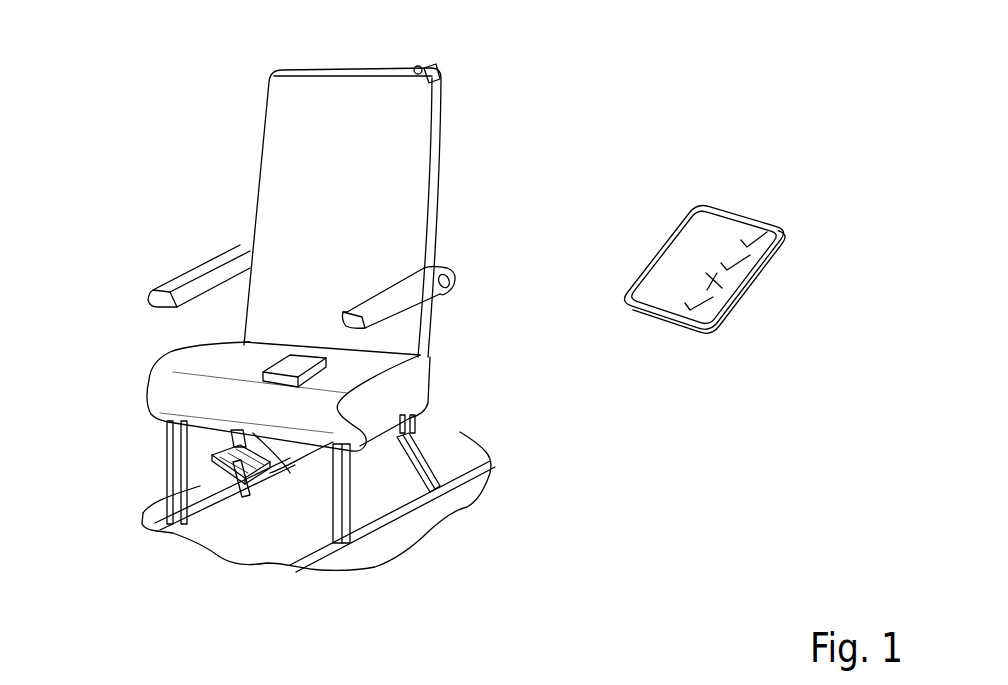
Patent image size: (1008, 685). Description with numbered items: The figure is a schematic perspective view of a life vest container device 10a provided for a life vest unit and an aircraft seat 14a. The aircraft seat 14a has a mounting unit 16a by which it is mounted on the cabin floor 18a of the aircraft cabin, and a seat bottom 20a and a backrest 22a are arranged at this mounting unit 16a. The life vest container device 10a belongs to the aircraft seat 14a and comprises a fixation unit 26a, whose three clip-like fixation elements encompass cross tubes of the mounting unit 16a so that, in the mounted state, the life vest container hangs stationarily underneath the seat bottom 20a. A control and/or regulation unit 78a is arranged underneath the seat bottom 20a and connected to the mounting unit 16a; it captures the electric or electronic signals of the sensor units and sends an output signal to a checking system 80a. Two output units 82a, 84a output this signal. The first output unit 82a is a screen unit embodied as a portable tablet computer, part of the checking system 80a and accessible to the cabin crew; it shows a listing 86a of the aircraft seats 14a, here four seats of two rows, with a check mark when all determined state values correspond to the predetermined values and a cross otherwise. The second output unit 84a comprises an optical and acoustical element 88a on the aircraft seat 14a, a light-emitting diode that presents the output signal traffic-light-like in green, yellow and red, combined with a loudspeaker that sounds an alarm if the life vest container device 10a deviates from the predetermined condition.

The life vest container device 10a is at (287, 472).
The aircraft seat 14a is at (232, 142).
The mounting unit 16a is at (426, 432).
The cabin floor 18a is at (229, 543).
The seat bottom 20a is at (228, 358).
The backrest 22a is at (385, 192).
The fixation unit 26a is at (222, 435).
The control and/or regulation unit 78a is at (337, 361).
The checking system 80a is at (670, 334).
The first output unit 82a is at (747, 303).
The second output unit 84a is at (428, 68).
The listing 86a is at (745, 229).
The optical and acoustical element 88a is at (414, 67).